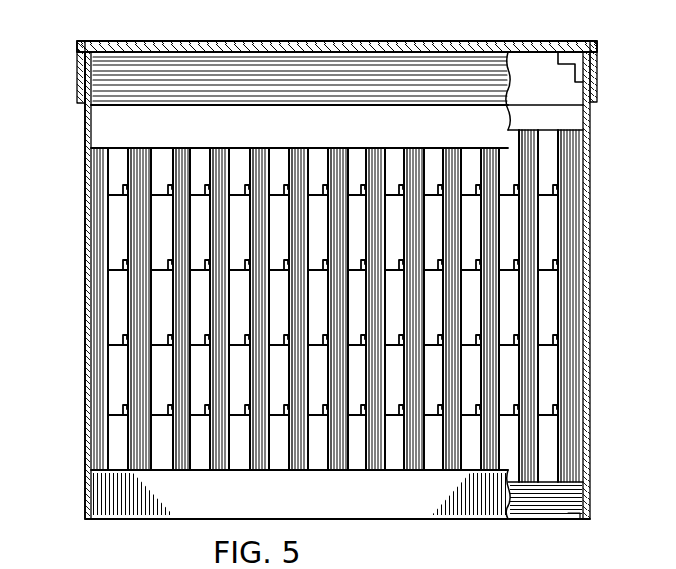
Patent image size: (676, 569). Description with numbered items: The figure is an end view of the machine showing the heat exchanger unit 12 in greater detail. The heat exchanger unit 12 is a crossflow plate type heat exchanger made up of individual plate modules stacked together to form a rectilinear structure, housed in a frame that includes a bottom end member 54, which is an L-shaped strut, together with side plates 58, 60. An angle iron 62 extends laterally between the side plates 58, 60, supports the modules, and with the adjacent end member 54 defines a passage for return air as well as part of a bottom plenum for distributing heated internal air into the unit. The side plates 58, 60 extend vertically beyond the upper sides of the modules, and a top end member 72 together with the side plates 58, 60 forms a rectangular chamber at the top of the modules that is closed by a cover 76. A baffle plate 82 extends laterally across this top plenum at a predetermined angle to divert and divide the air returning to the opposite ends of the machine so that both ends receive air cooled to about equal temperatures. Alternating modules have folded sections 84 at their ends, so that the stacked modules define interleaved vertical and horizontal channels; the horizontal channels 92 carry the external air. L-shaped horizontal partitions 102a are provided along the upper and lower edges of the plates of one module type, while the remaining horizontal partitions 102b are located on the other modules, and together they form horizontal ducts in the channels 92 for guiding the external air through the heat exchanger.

The heat exchanger unit 12 is at (598, 231).
The bottom end member 54 is at (452, 502).
The side plate 58 is at (591, 362).
The side plate 60 is at (87, 446).
The angle iron 62 is at (535, 505).
The top end member 72 is at (533, 128).
The cover 76 is at (237, 45).
The baffle plate 82 is at (407, 66).
The folded section 84 is at (120, 160).
The horizontal channel 92 is at (165, 163).
The horizontal partition 102a is at (358, 172).
The horizontal partition 102b is at (393, 265).